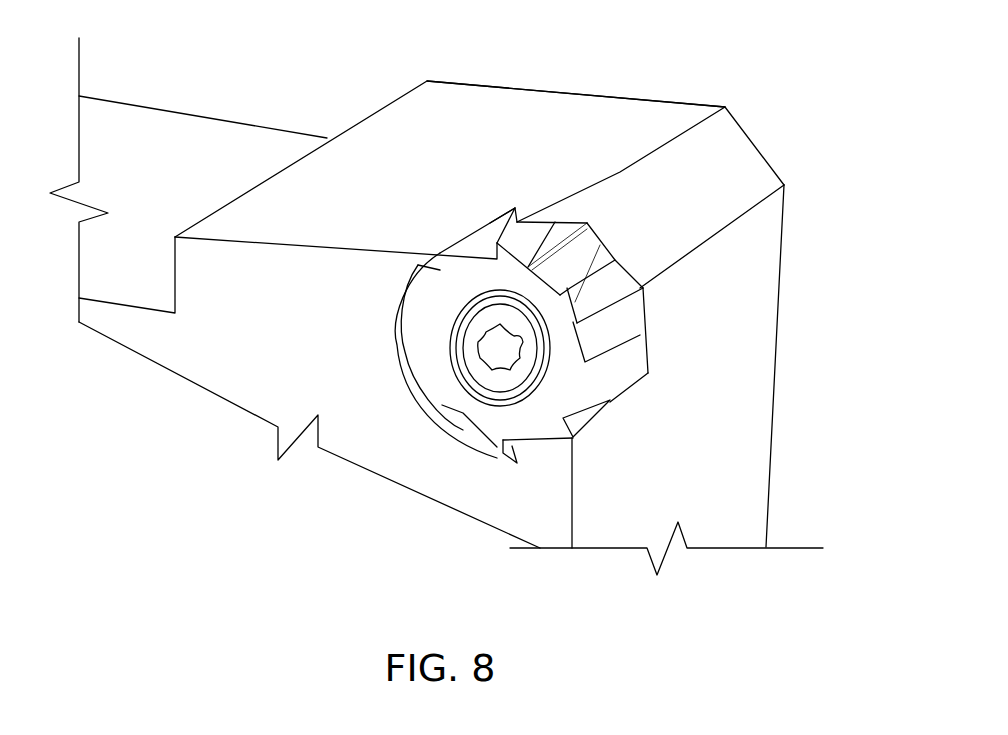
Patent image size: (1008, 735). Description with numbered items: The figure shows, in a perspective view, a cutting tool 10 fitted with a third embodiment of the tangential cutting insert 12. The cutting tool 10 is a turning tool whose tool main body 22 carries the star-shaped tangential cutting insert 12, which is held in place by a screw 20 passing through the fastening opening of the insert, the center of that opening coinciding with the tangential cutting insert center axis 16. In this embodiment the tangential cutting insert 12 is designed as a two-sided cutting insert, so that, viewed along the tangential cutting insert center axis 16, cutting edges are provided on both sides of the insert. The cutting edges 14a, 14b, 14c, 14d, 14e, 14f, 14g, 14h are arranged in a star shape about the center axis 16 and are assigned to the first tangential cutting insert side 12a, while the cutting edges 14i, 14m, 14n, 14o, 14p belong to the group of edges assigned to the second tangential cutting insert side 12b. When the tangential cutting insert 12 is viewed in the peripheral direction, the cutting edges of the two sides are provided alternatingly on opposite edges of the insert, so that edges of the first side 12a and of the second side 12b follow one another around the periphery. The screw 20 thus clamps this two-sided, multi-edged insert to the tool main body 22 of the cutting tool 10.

The cutting tool 10 is at (760, 76).
The tangential cutting insert 12 is at (610, 398).
The first tangential cutting insert side 12a is at (440, 290).
The second tangential cutting insert side 12b is at (540, 205).
The cutting edge 14a is at (436, 258).
The cutting edge 14b is at (415, 340).
The cutting edge 14c is at (445, 413).
The cutting edge 14d is at (505, 443).
The cutting edge 14e is at (573, 438).
The cutting edge 14f is at (640, 318).
The cutting edge 14g is at (645, 287).
The cutting edge 14h is at (500, 242).
The cutting edge 14i is at (543, 205).
The cutting edge 14m is at (608, 410).
The cutting edge 14n is at (646, 373).
The cutting edge 14o is at (580, 280).
The cutting edge 14p is at (596, 236).
The tangential cutting insert center axis 16 is at (290, 440).
The screw 20 is at (537, 327).
The tool main body 22 is at (760, 264).